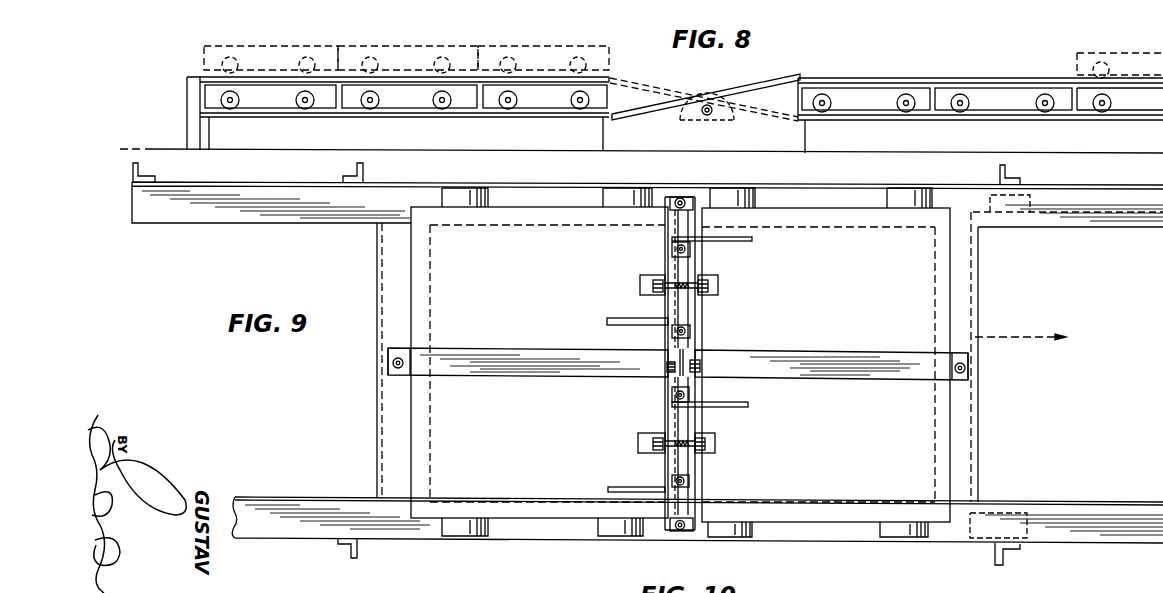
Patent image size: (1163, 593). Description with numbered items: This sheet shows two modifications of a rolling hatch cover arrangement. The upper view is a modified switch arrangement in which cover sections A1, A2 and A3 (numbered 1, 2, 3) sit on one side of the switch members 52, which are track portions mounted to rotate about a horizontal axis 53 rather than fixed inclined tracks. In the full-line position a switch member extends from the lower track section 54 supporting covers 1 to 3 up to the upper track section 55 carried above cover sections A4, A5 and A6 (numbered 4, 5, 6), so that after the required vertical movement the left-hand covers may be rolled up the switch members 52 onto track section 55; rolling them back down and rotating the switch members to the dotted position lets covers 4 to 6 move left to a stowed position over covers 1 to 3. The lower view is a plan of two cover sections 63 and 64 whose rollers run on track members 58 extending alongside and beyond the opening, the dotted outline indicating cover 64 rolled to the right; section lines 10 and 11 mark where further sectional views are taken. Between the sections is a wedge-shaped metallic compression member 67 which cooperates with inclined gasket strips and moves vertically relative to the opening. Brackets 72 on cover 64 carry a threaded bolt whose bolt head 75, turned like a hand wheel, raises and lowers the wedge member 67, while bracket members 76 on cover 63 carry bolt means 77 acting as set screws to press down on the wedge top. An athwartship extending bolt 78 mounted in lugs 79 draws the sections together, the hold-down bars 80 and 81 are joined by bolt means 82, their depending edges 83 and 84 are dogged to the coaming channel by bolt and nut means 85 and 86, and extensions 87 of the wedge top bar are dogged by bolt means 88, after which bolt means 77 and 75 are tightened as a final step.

In FIG. 8, the cover section A1 1 is at (258, 100).
In FIG. 8, the cover section A2 2 is at (395, 100).
In FIG. 8, the cover section A3 3 is at (535, 100).
In FIG. 8, the cover section A4 4 is at (271, 58).
In FIG. 8, the cover section A5 5 is at (405, 58).
In FIG. 8, the cover section A6 6 is at (543, 58).
In FIG. 9, the section line 10- 10 is at (358, 368).
In FIG. 9, the section line 11- 11 is at (755, 258).
In FIG. 8, the switch members 52 is at (746, 87).
In FIG. 8, the horizontal axis 53 is at (707, 115).
In FIG. 8, the lower track section 54 is at (264, 109).
In FIG. 8, the upper track section 55 is at (1000, 78).
In FIG. 9, the track members 58 is at (305, 210).
In FIG. 9, the cover section 63 is at (513, 306).
In FIG. 9, the cover section 64 is at (816, 310).
In FIG. 9, the compression wedge member 67 is at (677, 309).
In FIG. 9, the brackets 72 is at (725, 237).
In FIG. 9, the bolt head 75 is at (690, 250).
In FIG. 9, the bracket members 76 is at (638, 323).
In FIG. 9, the bolt means 77 is at (690, 331).
In FIG. 9, the athwartship extending bolt 78 is at (685, 291).
In FIG. 9, the lugs 79 is at (640, 286).
In FIG. 9, the hold-down bar 80 is at (513, 359).
In FIG. 9, the hold-down bar 81 is at (818, 359).
In FIG. 9, the bolt means 82 is at (700, 366).
In FIG. 9, the depending edge 83 is at (400, 350).
In FIG. 9, the depending edge 84 is at (962, 351).
In FIG. 9, the bolt and nut means 85 is at (398, 369).
In FIG. 9, the bolt and nut means 86 is at (960, 374).
In FIG. 9, the extensions 87 is at (693, 200).
In FIG. 9, the bolt means 88 is at (679, 199).